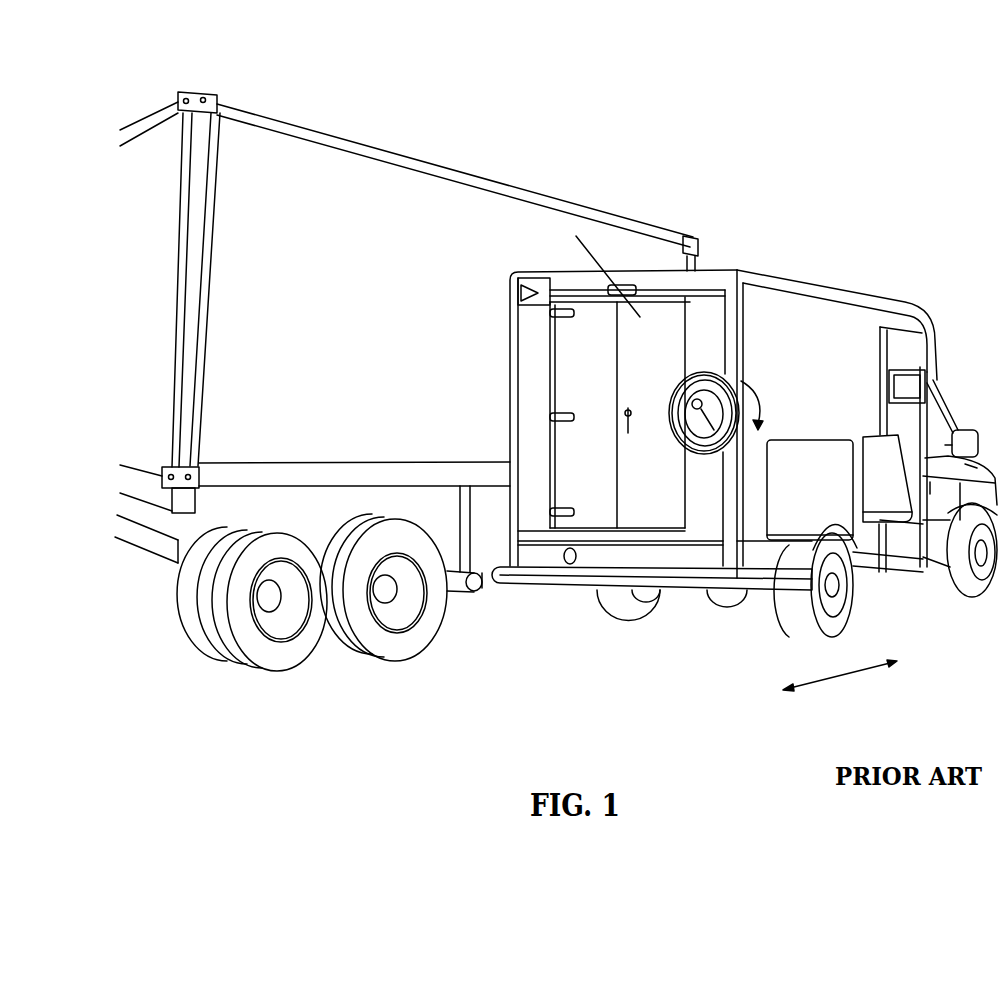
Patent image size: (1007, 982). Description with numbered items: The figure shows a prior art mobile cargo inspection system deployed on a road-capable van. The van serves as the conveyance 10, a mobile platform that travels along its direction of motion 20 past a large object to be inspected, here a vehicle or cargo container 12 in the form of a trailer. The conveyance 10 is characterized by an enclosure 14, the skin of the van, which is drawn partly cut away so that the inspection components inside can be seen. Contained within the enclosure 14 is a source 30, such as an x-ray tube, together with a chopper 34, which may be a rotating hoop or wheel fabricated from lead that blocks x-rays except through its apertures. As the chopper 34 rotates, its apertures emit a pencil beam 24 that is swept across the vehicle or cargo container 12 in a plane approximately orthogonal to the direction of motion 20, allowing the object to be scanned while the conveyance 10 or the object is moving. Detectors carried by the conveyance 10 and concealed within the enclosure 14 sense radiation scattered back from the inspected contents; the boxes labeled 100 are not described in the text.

The conveyance 10 is at (739, 422).
The vehicle or cargo container 12 is at (437, 164).
The enclosure 14 is at (834, 346).
The direction of motion 20 is at (858, 675).
The pencil beam 24 is at (573, 232).
The source 30 is at (702, 370).
The chopper 34 is at (710, 381).
The storage box 100 is at (792, 449).